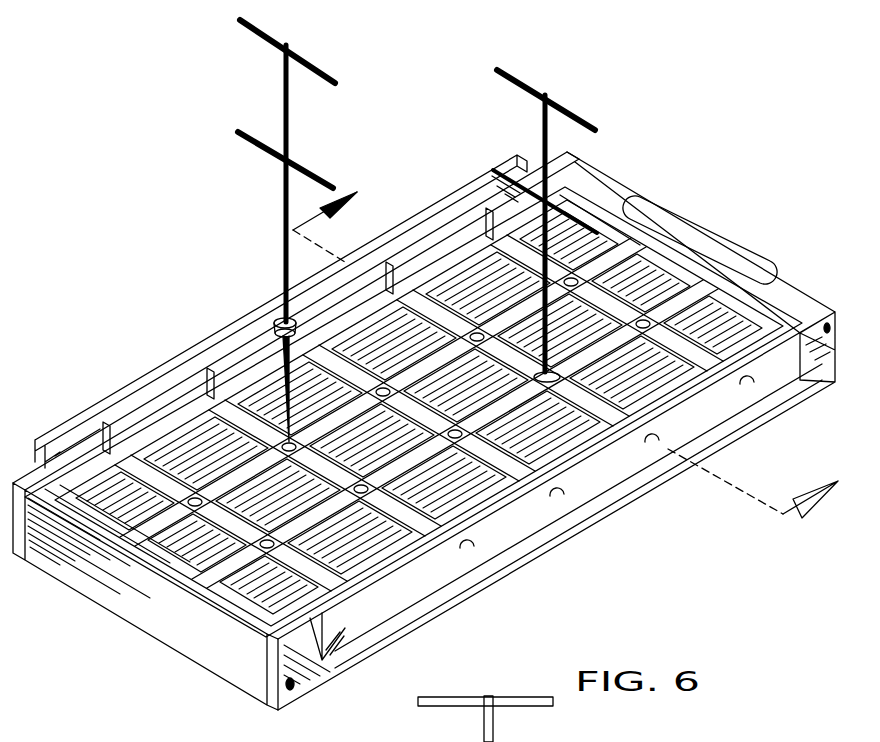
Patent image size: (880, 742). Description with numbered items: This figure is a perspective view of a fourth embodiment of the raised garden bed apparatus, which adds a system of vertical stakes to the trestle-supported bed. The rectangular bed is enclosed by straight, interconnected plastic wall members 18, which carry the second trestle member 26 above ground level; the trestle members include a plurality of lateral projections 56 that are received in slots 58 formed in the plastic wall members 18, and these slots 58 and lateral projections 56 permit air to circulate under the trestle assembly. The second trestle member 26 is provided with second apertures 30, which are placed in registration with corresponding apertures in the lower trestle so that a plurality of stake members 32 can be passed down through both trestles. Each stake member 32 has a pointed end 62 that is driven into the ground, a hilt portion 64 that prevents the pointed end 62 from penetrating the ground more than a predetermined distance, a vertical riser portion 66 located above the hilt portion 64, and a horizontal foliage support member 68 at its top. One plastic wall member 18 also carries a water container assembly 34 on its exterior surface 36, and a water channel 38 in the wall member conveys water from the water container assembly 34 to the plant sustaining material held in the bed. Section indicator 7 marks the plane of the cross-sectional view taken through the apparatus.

The section line 7- 7 is at (565, 345).
The plastic wall member 18 is at (112, 600).
The second trestle member 26 is at (660, 208).
The second apertures 30 is at (192, 506).
The stake member 32 is at (272, 176).
The water container assembly 34 is at (155, 366).
The exterior surface 36 is at (431, 558).
The water channel 38 is at (557, 519).
The lateral projections 56 is at (378, 291).
The slots 58 is at (210, 370).
The pointed end 62 is at (279, 355).
The hilt portion 64 is at (283, 312).
The vertical riser portion 66 is at (283, 207).
The horizontal foliage support member 68 is at (300, 46).